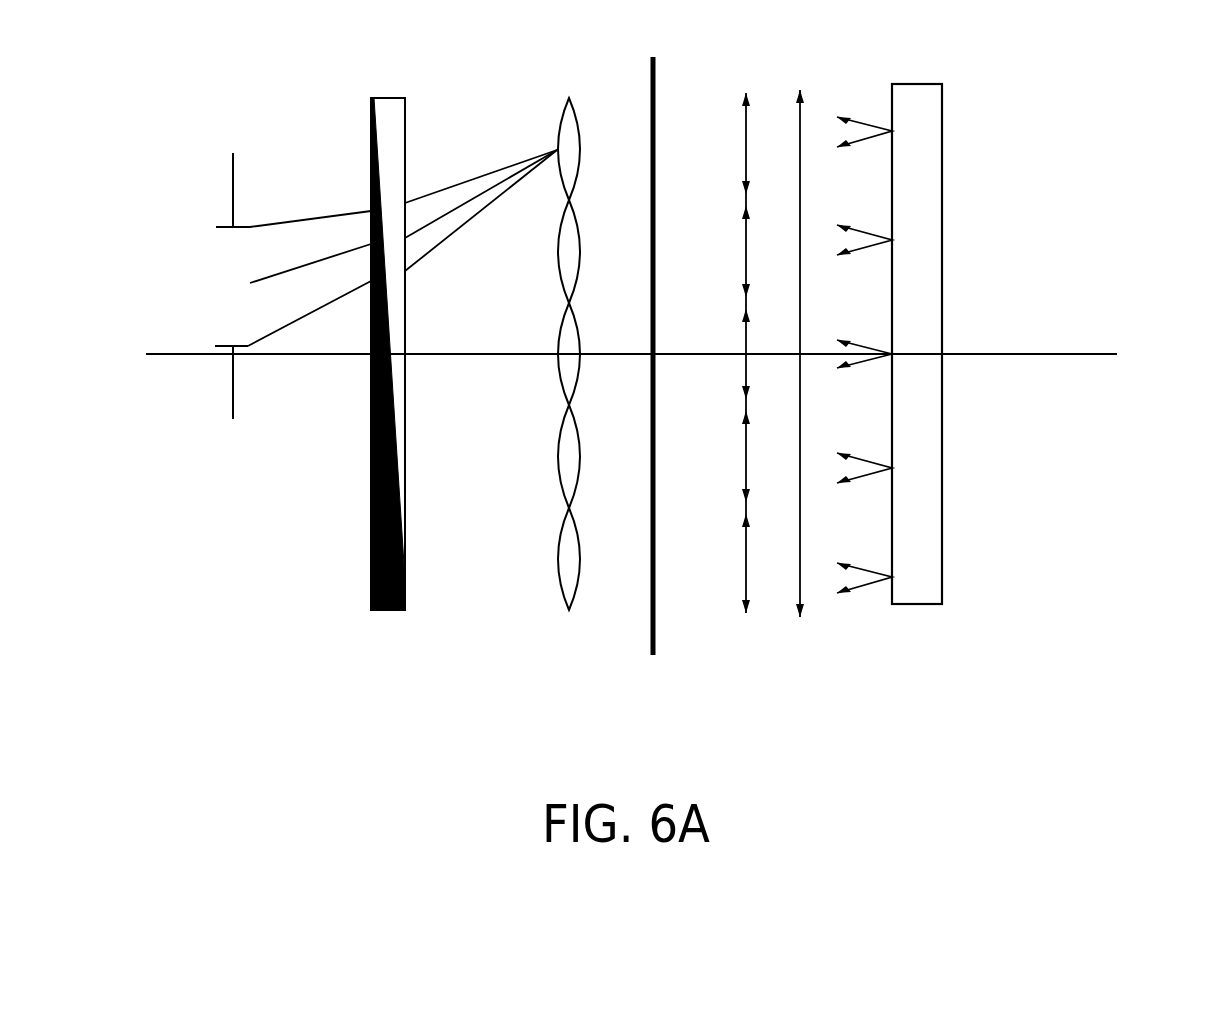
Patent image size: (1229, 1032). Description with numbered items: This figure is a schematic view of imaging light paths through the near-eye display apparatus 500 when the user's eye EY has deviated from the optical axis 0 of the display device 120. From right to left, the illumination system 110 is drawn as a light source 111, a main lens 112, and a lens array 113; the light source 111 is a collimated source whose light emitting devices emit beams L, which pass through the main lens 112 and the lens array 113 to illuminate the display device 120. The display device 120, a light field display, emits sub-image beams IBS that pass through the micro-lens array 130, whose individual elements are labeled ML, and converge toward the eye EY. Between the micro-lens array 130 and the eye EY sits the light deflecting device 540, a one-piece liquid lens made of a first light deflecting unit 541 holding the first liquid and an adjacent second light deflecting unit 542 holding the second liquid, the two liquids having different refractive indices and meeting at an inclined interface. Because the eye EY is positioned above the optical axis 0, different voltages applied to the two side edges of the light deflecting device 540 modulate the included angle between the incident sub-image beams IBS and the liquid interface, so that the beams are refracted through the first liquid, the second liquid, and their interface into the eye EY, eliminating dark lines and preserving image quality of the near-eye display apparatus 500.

The near-eye display apparatus 500 is at (1178, 734).
The illumination system 110 is at (842, 406).
The light source 111 is at (915, 604).
The main lens 112 is at (801, 607).
The lens array 113 is at (747, 605).
The display device 120 is at (656, 72).
The micro-lens array 130 is at (546, 317).
The light deflecting device 540 is at (404, 353).
The first light deflecting unit 541 is at (388, 108).
The second light deflecting unit 542 is at (385, 612).
The microlens ML is at (563, 112).
The beam L is at (845, 225).
The sub-image beam IBS is at (445, 193).
The eye EY is at (233, 172).
The optical axis 0 is at (643, 351).